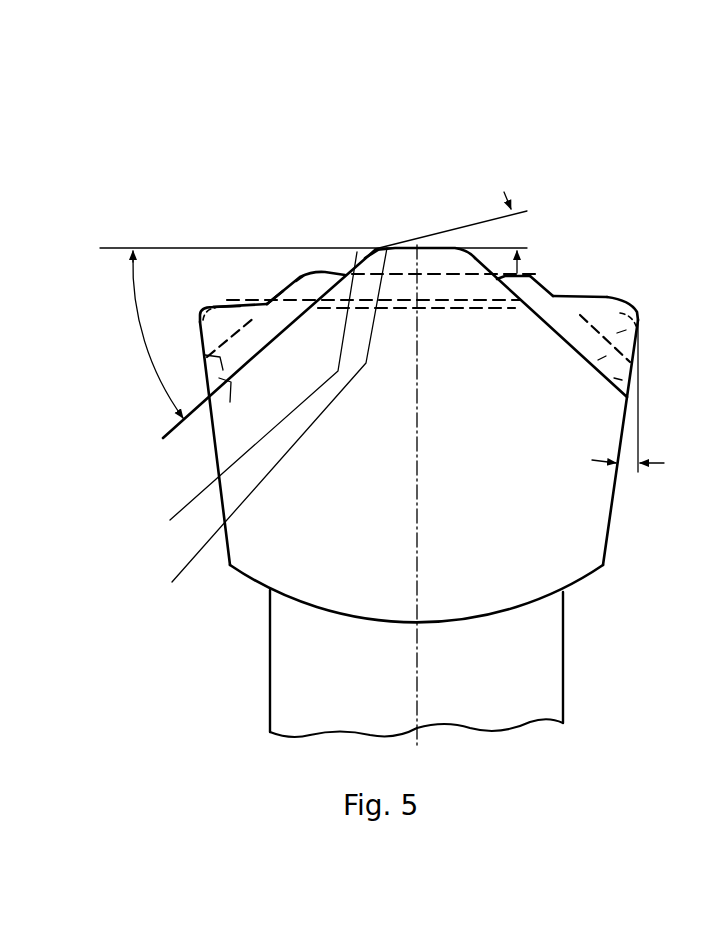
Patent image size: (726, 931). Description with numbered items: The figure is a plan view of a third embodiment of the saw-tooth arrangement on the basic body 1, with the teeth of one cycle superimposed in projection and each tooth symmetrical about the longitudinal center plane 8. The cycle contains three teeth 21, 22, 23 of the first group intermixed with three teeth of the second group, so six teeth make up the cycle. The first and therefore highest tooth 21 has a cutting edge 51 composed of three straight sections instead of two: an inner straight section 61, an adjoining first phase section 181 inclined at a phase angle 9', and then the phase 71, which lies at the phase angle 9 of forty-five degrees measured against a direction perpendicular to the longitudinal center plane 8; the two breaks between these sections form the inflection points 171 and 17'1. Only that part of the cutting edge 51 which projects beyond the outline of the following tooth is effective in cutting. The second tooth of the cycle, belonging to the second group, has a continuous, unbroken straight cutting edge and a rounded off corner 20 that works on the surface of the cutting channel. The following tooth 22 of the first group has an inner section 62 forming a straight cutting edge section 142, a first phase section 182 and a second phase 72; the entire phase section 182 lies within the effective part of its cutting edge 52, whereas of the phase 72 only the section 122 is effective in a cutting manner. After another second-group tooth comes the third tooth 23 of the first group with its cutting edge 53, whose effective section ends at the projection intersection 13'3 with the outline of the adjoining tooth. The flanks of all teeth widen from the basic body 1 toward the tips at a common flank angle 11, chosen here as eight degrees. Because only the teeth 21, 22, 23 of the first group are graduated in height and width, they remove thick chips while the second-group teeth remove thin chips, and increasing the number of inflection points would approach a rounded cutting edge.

The basic body 1 is at (498, 675).
The longitudinal center plane 8 is at (417, 642).
The first tooth of the first group 21 is at (455, 372).
The second tooth of the first group 22 is at (600, 358).
The third tooth of the first group 23 is at (617, 333).
The rounded off corner 20 is at (200, 310).
The straight section 61 is at (408, 248).
The inner section 62 is at (452, 275).
The straight cutting edge section 142 is at (329, 272).
The first phase section 182 is at (300, 277).
The first phase section 181 is at (375, 249).
The effective cutting section 122 is at (280, 289).
The projection intersection 13'3 is at (206, 215).
The cutting edge 51 is at (525, 287).
The cutting edge 52 is at (537, 271).
The cutting edge 53 is at (609, 295).
The phase angle 9 is at (158, 334).
The phase angle of first phase section 9' is at (451, 232).
The second phase 72 is at (222, 370).
The phase 71 is at (230, 402).
The inflection point 17'1 is at (245, 400).
The inflection point 171 is at (263, 432).
The flank angle 11 is at (630, 395).